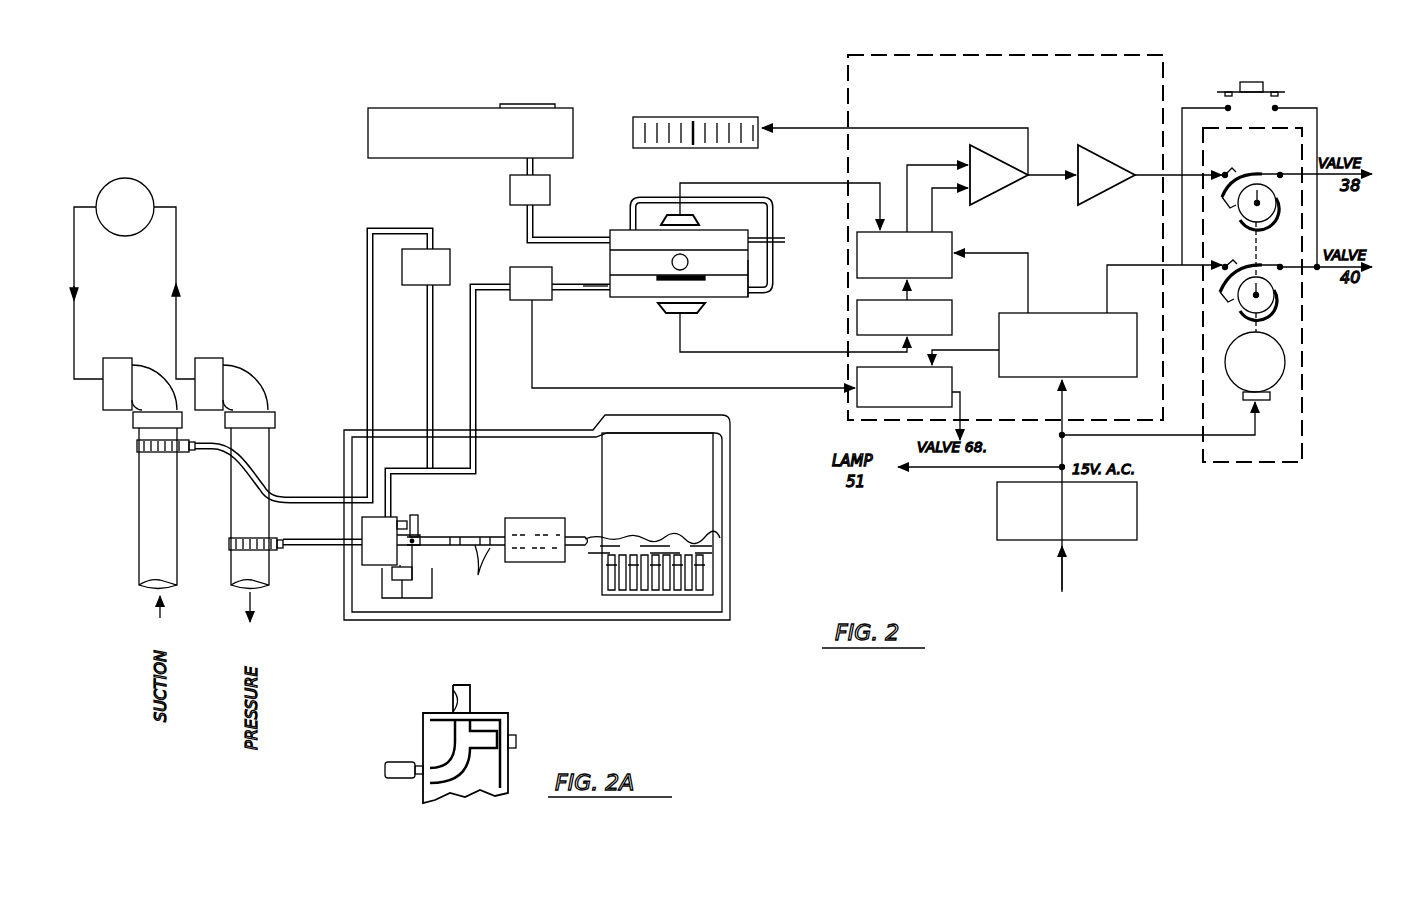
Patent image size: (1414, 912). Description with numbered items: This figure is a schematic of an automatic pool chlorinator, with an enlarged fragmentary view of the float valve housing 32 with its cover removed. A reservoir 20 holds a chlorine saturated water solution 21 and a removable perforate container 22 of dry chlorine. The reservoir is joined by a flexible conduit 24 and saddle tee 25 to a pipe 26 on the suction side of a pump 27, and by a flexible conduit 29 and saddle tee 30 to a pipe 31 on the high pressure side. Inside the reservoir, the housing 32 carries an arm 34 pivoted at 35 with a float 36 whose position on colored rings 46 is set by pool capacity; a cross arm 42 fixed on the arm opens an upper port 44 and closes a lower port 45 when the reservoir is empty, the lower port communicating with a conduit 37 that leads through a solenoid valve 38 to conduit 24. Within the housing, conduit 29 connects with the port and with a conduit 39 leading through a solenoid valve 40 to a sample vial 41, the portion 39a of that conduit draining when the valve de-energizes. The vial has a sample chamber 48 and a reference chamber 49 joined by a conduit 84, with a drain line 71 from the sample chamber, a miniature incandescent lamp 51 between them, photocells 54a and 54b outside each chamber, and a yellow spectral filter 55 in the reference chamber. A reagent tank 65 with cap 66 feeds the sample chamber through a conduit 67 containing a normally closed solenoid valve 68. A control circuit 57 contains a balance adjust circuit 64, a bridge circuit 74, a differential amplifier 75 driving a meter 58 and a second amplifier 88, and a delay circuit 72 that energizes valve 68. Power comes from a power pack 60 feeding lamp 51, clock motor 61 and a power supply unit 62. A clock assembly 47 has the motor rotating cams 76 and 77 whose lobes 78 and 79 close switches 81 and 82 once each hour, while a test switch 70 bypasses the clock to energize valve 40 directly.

In FIG. 2, the reservoir 20 is at (526, 622).
In FIG. 2, the chlorine saturated water solution 21 is at (668, 536).
In FIG. 2, the perforate container 22 is at (713, 478).
In FIG. 2, the flexible conduit 24 is at (322, 498).
In FIG. 2, the saddle tee 25 is at (137, 446).
In FIG. 2, the pipe 26 is at (139, 525).
In FIG. 2, the pump 27 is at (125, 178).
In FIG. 2, the flexible conduit 29 is at (322, 546).
In FIG. 2A, the flexible conduit 29 is at (397, 780).
In FIG. 2, the saddle tee 30 is at (232, 540).
In FIG. 2, the pipe 31 is at (232, 585).
In FIG. 2, the housing 32 is at (362, 530).
In FIG. 2A, the housing 32 is at (423, 730).
In FIG. 2, the arm 34 is at (470, 537).
In FIG. 2, the pivot 35 is at (422, 548).
In FIG. 2, the float 36 is at (540, 518).
In FIG. 2, the conduit 37 is at (376, 600).
In FIG. 2, the solenoid valve 38 is at (418, 288).
In FIG. 2, the conduit 39 is at (412, 470).
In FIG. 2A, the conduit 39 is at (472, 696).
In FIG. 2, the conduit portion 39a is at (590, 292).
In FIG. 2, the solenoid valve 40 is at (525, 302).
In FIG. 2, the sample vial 41 is at (633, 305).
In FIG. 2, the cross arm 42 is at (420, 520).
In FIG. 2, the upper port 44 is at (402, 521).
In FIG. 2A, the upper port 44 is at (518, 742).
In FIG. 2, the lower port 45 is at (402, 584).
In FIG. 2, the colored rings 46 is at (478, 550).
In FIG. 2, the clock assembly 47 is at (1302, 368).
In FIG. 2, the sample chamber 48 is at (716, 242).
In FIG. 2, the reference chamber 49 is at (736, 292).
In FIG. 2, the miniature incandescent lamp 51 is at (672, 262).
In FIG. 2, the photocell 54a is at (668, 214).
In FIG. 2, the photocell 54b is at (668, 314).
In FIG. 2, the yellow spectral filter 55 is at (658, 280).
In FIG. 2, the control circuit 57 is at (996, 55).
In FIG. 2, the meter 58 is at (756, 117).
In FIG. 2, the power pack 60 is at (1137, 514).
In FIG. 2, the clock motor 61 is at (1232, 385).
In FIG. 2, the power supply unit 62 is at (1098, 378).
In FIG. 2, the balance adjust circuit 64 is at (856, 314).
In FIG. 2, the reagent tank 65 is at (410, 108).
In FIG. 2, the cap 66 is at (525, 104).
In FIG. 2, the conduit 67 is at (527, 236).
In FIG. 2, the solenoid valve 68 is at (509, 188).
In FIG. 2, the test switch 70 is at (1265, 87).
In FIG. 2, the drain line 71 is at (788, 240).
In FIG. 2, the delay circuit 72 is at (856, 398).
In FIG. 2, the bridge circuit 74 is at (954, 242).
In FIG. 2, the differential amplifier 75 is at (966, 158).
In FIG. 2, the cam 76 is at (1276, 216).
In FIG. 2, the cam 77 is at (1276, 304).
In FIG. 2, the lobe 78 is at (1230, 210).
In FIG. 2, the lobe 79 is at (1230, 302).
In FIG. 2, the switch 81 is at (1228, 172).
In FIG. 2, the switch 82 is at (1222, 270).
In FIG. 2, the conduit 84 is at (772, 276).
In FIG. 2, the second amplifier 88 is at (1102, 152).